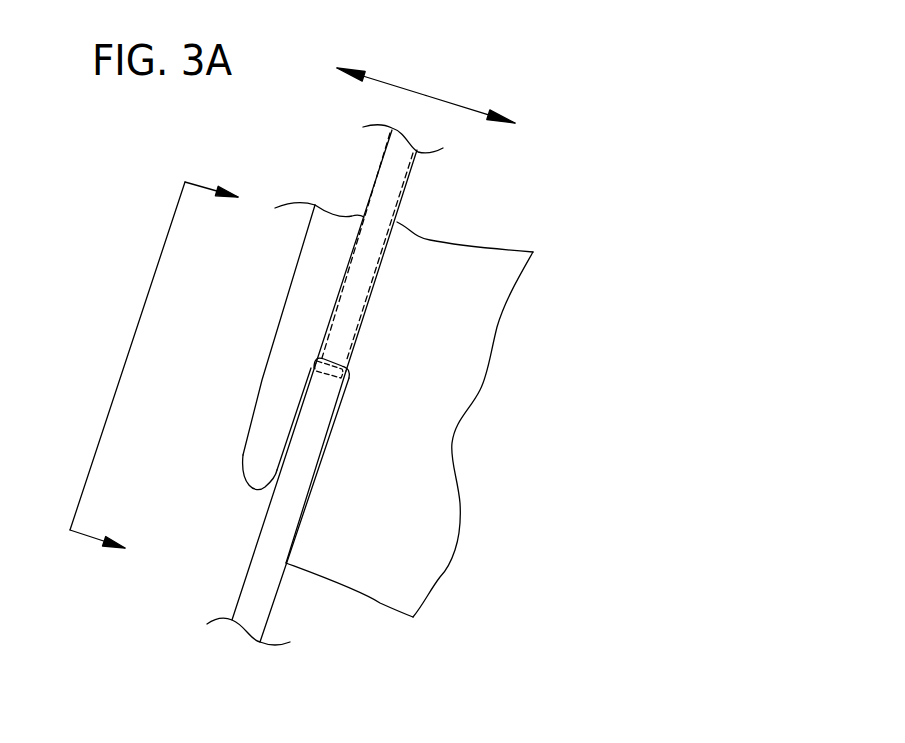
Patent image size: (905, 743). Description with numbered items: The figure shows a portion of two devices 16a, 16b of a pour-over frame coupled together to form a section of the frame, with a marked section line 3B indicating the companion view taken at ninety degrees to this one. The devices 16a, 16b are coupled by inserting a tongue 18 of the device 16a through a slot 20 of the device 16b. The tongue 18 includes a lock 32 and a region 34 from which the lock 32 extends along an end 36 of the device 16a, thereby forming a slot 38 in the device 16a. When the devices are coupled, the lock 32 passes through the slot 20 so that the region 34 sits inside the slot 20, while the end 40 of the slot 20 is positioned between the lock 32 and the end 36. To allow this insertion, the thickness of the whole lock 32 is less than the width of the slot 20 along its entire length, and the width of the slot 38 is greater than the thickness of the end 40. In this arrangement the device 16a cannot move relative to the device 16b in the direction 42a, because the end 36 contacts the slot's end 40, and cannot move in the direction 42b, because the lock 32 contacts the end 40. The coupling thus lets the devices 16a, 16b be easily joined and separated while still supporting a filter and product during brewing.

The section line for FIG. 3B view 3B is at (139, 356).
The device 16a is at (307, 232).
The device 16b is at (256, 541).
The tongue 18 is at (243, 437).
The slot 20 is at (373, 183).
The lock 32 is at (255, 458).
The region 34 is at (333, 357).
The end 36 is at (310, 507).
The slot 38 is at (293, 405).
The end 40 is at (313, 392).
The direction 42a is at (373, 75).
The direction 42b is at (463, 110).